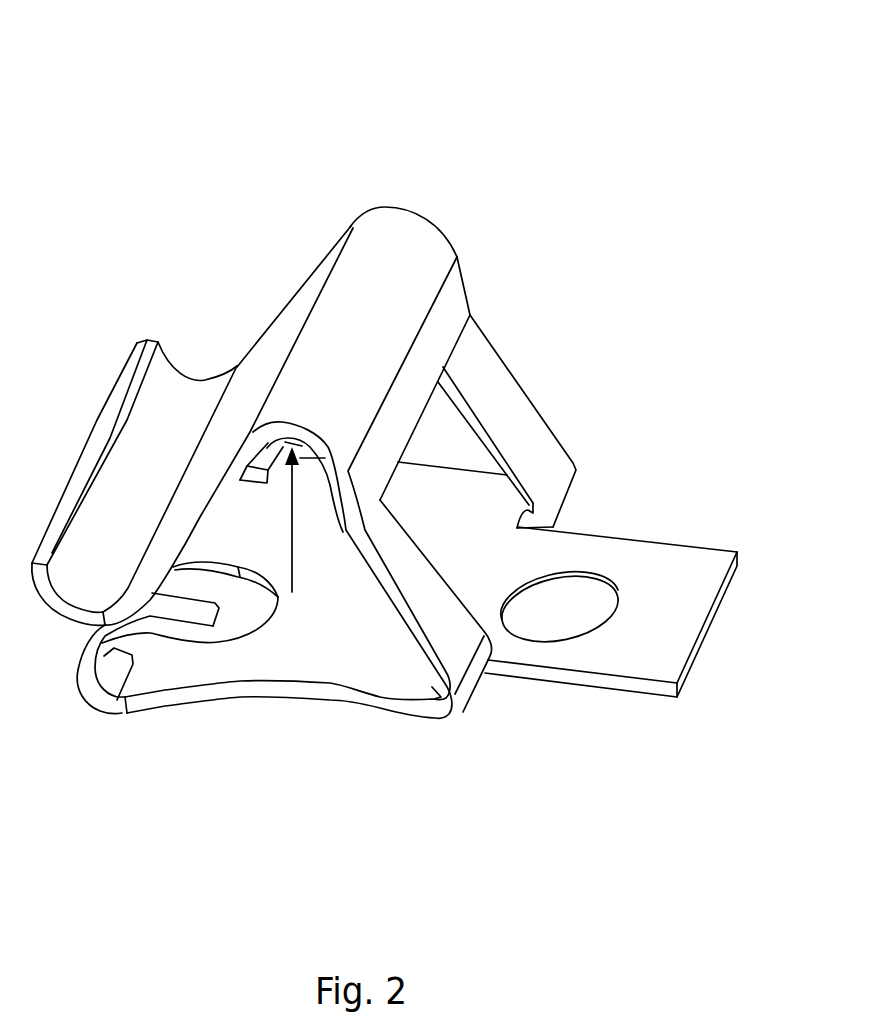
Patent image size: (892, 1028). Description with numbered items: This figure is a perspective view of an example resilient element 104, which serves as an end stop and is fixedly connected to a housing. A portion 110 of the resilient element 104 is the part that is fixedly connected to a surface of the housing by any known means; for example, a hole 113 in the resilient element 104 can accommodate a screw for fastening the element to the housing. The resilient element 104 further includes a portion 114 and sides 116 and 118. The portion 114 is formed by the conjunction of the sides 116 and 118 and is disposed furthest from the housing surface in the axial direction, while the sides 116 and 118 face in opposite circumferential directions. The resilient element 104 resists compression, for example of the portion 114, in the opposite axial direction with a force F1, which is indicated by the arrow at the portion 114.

The resilient element 104 is at (477, 62).
The portion 110 is at (686, 545).
The hole 113 is at (573, 600).
The portion 114 is at (398, 220).
The side 116 is at (293, 313).
The side 118 is at (453, 297).
The force F1 is at (291, 535).